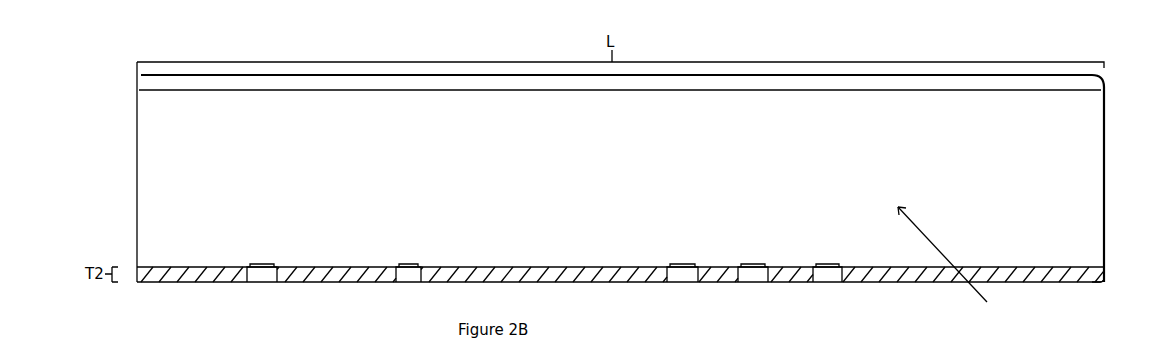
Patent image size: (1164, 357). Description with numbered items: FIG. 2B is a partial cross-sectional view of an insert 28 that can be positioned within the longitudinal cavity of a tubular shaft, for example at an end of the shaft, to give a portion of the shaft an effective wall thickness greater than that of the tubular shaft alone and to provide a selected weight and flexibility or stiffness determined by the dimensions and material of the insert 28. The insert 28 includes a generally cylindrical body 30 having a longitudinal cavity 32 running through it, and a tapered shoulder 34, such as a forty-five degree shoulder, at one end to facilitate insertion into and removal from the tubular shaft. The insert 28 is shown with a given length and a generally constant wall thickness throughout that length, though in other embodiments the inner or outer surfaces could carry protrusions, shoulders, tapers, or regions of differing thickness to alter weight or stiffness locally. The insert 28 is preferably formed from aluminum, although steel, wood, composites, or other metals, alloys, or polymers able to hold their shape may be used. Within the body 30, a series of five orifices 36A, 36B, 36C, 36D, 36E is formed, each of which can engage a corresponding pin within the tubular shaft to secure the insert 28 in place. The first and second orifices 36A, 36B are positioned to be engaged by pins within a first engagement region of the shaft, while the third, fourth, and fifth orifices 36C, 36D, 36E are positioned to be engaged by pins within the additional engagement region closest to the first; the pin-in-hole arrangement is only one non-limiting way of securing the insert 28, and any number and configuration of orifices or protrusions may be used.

The insert 28 is at (139, 50).
The body 30 is at (591, 283).
The longitudinal cavity 32 is at (953, 264).
The tapered shoulder 34 is at (1106, 283).
The first orifice 36A is at (262, 275).
The second orifice 36B is at (407, 278).
The third orifice 36C is at (683, 274).
The fourth orifice 36D is at (752, 274).
The fifth orifice 36E is at (827, 272).